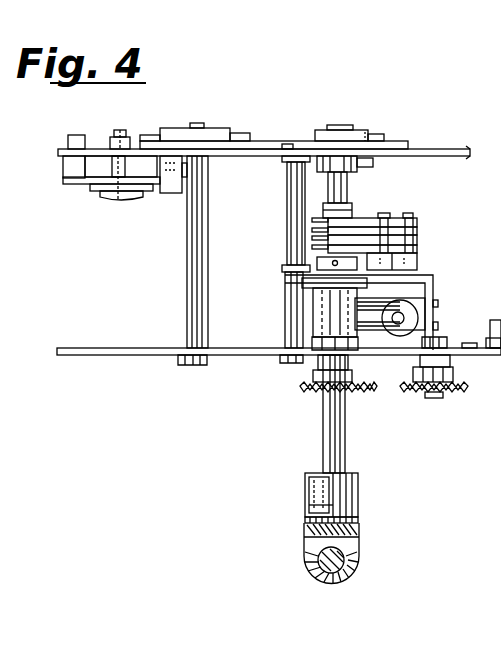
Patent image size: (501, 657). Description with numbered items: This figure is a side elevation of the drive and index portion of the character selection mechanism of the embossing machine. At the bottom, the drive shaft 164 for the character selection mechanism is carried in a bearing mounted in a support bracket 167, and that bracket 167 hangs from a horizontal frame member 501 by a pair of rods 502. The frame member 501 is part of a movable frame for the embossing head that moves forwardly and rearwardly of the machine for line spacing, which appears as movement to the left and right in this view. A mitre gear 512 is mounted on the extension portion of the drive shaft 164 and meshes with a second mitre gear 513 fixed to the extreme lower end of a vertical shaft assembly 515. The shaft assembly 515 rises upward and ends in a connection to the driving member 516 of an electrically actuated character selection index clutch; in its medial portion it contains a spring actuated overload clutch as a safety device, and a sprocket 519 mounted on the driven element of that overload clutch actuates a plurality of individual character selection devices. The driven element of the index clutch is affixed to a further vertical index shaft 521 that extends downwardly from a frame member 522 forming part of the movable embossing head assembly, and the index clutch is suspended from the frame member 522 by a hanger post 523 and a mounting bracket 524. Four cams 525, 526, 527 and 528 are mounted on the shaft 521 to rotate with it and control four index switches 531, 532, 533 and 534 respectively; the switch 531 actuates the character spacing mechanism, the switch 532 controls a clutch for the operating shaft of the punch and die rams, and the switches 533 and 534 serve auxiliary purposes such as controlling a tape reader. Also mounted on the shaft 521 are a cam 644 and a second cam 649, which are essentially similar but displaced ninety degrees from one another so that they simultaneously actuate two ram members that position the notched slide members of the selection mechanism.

The cam 644 is at (365, 132).
The second cam 649 is at (369, 139).
The frame member 522 is at (430, 150).
The hanger post 523 is at (291, 183).
The vertical index shaft 521 is at (343, 187).
The index switch 534 is at (418, 222).
The index switch 533 is at (418, 230).
The index switch 532 is at (418, 240).
The index switch 531 is at (418, 250).
The cam 528 is at (312, 220).
The cam 527 is at (312, 230).
The cam 526 is at (312, 238).
The cam 525 is at (312, 247).
The mounting bracket 524 is at (436, 279).
The horizontal frame member 501 is at (126, 348).
The driving member 516 is at (288, 342).
The sprocket 519 is at (300, 386).
The vertical shaft assembly 515 is at (320, 432).
The rods 502 is at (331, 453).
The support bracket 167 is at (358, 512).
The second mitre gear 513 is at (309, 527).
The drive shaft 164 is at (308, 570).
The mitre gear 512 is at (352, 574).